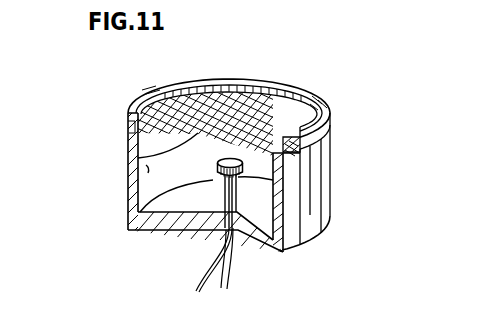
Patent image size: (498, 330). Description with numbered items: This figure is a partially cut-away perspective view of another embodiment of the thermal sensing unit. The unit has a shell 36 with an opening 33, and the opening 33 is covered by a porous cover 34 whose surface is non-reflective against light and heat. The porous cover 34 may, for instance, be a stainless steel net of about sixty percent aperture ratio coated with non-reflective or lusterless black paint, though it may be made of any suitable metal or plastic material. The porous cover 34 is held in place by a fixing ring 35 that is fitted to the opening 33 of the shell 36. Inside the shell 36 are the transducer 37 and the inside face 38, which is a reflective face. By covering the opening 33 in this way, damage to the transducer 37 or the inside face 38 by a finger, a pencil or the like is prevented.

The opening 33 is at (138, 160).
The porous cover 34 is at (273, 90).
The fixing ring 35 is at (326, 126).
The shell 36 is at (312, 200).
The transducer 37 is at (217, 180).
The inside face (reflective face) 38 is at (148, 173).